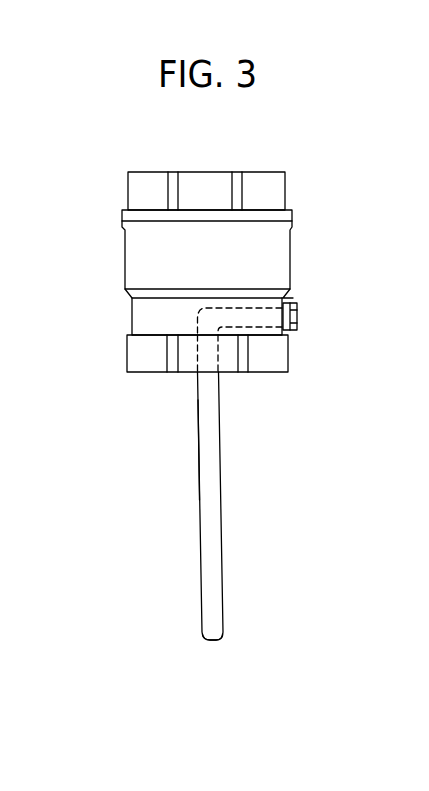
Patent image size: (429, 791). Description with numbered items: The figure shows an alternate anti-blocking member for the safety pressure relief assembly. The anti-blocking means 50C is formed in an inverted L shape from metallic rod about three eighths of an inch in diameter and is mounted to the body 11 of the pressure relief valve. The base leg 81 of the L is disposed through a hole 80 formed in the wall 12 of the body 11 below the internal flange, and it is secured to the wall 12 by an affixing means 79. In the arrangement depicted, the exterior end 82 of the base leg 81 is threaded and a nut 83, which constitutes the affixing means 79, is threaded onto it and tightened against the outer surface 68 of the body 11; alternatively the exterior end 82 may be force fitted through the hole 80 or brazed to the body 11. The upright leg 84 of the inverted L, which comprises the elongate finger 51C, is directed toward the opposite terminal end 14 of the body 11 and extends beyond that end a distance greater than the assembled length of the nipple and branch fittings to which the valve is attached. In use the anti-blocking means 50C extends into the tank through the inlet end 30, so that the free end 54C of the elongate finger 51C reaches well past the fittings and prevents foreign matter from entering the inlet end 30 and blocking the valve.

The body 11 is at (135, 258).
The wall 12 is at (292, 247).
The opposite terminal end 14 is at (140, 375).
The inlet end 30 is at (184, 378).
The outer surface 68 is at (135, 310).
The affixing means 79 is at (313, 298).
The hole 80 is at (280, 332).
The base leg 81 is at (197, 320).
The exterior end 82 is at (298, 312).
The nut 83 is at (293, 327).
The upright leg 84 is at (212, 467).
The anti-blocking means 50C is at (135, 555).
The elongate finger 51C is at (213, 550).
The free end 54C is at (213, 638).